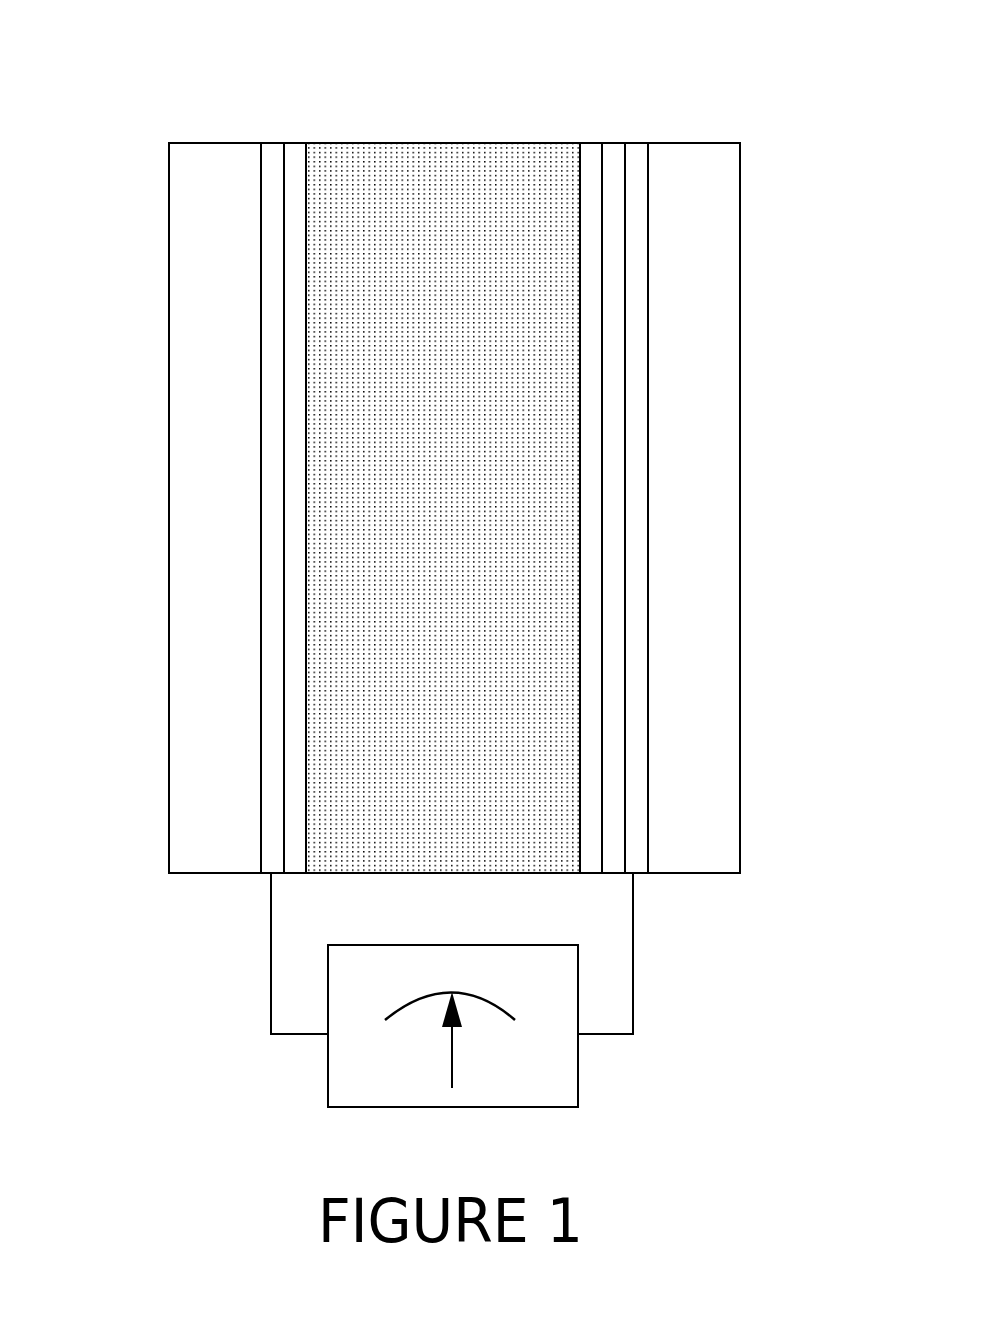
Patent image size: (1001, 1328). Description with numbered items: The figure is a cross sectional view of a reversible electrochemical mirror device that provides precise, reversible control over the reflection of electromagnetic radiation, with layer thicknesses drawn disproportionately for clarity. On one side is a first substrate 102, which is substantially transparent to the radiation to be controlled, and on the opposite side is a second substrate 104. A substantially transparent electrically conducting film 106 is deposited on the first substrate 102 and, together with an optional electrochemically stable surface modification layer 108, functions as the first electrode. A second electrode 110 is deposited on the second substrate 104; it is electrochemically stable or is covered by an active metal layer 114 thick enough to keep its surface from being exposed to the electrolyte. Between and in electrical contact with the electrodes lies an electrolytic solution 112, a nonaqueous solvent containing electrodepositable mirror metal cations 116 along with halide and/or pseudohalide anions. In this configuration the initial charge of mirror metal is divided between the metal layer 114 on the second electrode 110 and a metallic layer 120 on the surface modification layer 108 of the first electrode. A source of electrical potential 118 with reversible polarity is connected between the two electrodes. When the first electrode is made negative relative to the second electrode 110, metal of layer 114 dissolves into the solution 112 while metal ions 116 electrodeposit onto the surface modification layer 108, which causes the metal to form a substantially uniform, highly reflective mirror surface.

The first substrate 102 is at (703, 275).
The second substrate 104 is at (183, 537).
The electrically conducting film 106 is at (640, 153).
The surface modification layer 108 is at (612, 153).
The second electrode 110 is at (275, 153).
The electrolytic solution 112 is at (431, 160).
The active metal layer 114 is at (297, 153).
The mirror metal cations 116 is at (363, 212).
The source of electrical potential 118 is at (555, 1079).
The metallic layer 120 is at (592, 155).